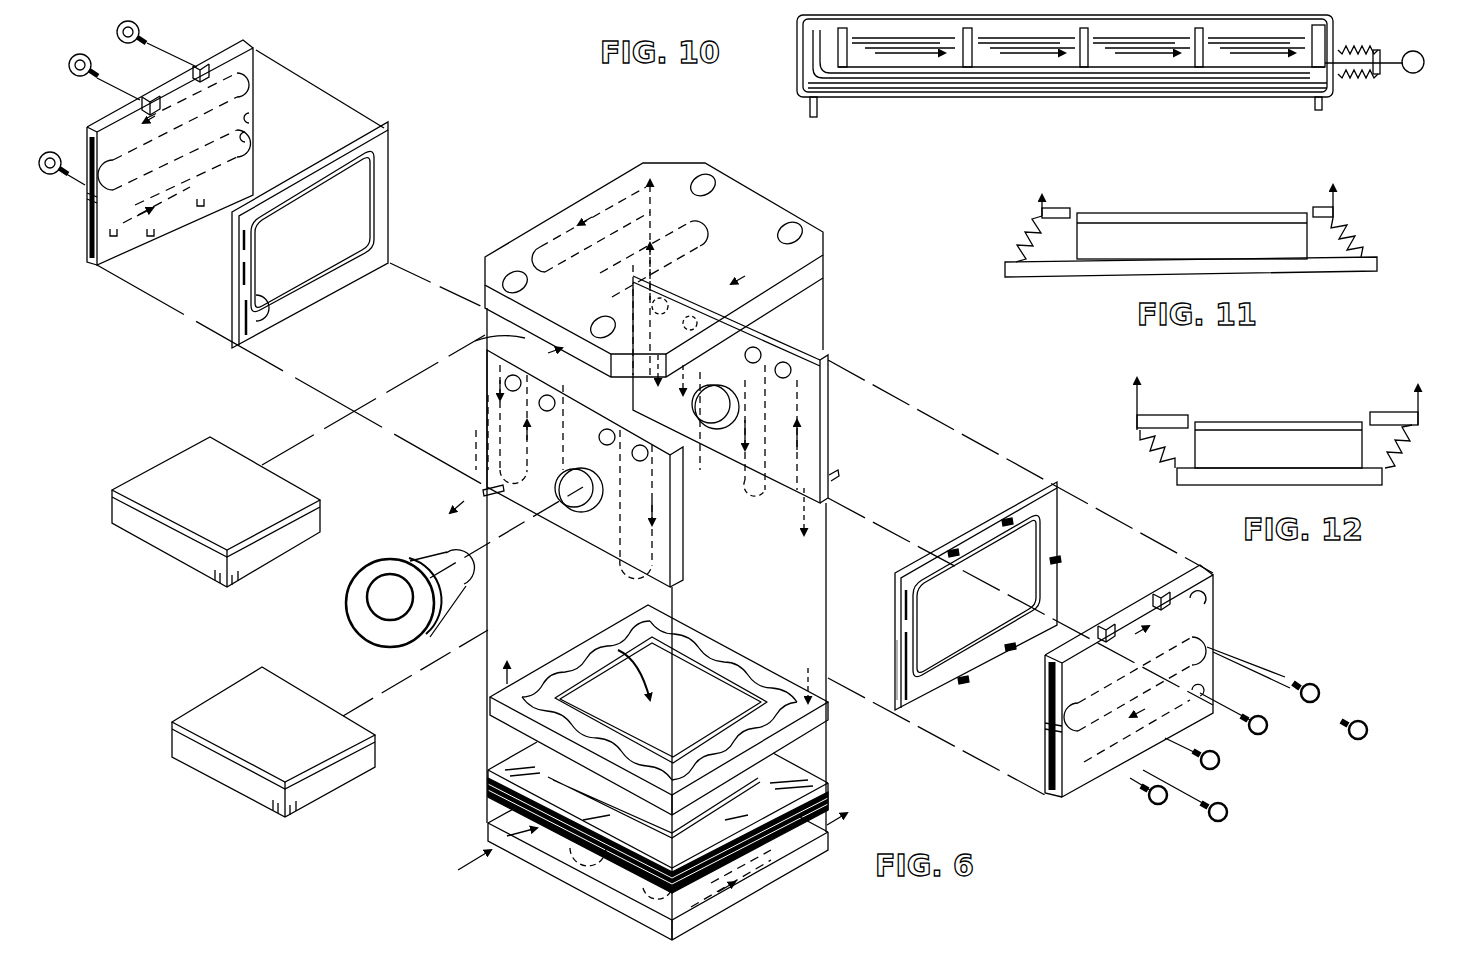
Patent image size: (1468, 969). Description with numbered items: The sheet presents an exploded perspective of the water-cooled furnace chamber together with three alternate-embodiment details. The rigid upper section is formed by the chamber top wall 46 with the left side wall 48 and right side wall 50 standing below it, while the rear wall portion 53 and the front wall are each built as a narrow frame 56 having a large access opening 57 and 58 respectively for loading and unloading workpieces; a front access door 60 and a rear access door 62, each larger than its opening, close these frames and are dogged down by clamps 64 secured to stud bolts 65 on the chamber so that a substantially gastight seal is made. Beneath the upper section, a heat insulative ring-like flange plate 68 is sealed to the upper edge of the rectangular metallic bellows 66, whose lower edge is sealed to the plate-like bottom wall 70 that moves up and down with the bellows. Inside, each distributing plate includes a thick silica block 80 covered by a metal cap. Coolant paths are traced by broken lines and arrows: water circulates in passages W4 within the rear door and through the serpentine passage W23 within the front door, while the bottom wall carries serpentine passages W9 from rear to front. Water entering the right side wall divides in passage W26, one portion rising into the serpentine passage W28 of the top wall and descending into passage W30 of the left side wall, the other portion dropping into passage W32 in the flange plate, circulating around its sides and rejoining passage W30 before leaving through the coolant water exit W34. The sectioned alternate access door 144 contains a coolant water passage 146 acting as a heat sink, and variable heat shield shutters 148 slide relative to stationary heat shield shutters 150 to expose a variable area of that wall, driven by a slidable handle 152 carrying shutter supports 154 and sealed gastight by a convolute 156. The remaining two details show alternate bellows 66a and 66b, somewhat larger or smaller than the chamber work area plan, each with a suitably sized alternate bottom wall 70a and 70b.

In FIG. 6, the chamber top wall 46 is at (824, 246).
In FIG. 6, the chamber left side wall 48 is at (573, 507).
In FIG. 6, the chamber right side wall 50 is at (822, 383).
In FIG. 6, the rear wall portion 53 is at (252, 139).
In FIG. 6, the narrow frame 56 is at (390, 158).
In FIG. 6, the access opening 57 is at (898, 624).
In FIG. 6, the access opening 58 is at (257, 338).
In FIG. 6, the front access door 60 is at (1207, 627).
In FIG. 6, the rear access door 62 is at (262, 49).
In FIG. 6, the clamps 64 is at (50, 152).
In FIG. 6, the stud bolts 65 is at (1058, 560).
In FIG. 6, the metallic bellows 66 is at (828, 793).
In FIG. 11, the alternate bellows 66a is at (1348, 225).
In FIG. 12, the alternate bellows 66b is at (1140, 432).
In FIG. 6, the flange plate 68 is at (820, 717).
In FIG. 6, the bottom wall 70 is at (817, 850).
In FIG. 11, the alternate bottom wall 70a is at (1330, 277).
In FIG. 12, the alternate bottom wall 70b is at (1360, 485).
In FIG. 6, the block of ceramic material 80 is at (226, 708).
In FIG. 11, the block of ceramic material 80 is at (1200, 235).
In FIG. 12, the block of ceramic material 80 is at (1262, 445).
In FIG. 6, the coolant passages W4 is at (243, 100).
In FIG. 6, the serpentine coolant passages W9 is at (757, 870).
In FIG. 6, the serpentine coolant passage W23 is at (1080, 752).
In FIG. 6, the coolant passage W26 is at (803, 403).
In FIG. 6, the coolant passage W28 is at (700, 224).
In FIG. 6, the coolant passage W30 is at (488, 489).
In FIG. 6, the coolant passage W32 is at (693, 637).
In FIG. 6, the coolant water exit W34 is at (483, 492).
In FIG. 10, the alternate access door 144 is at (1007, 97).
In FIG. 10, the coolant water passage 146 is at (1157, 83).
In FIG. 10, the variable heat shield shutters 148 is at (987, 62).
In FIG. 10, the stationary heat shield shutters 150 is at (1057, 66).
In FIG. 10, the slidable handle 152 is at (1393, 60).
In FIG. 10, the shutter supports 154 is at (1090, 58).
In FIG. 10, the convolute 156 is at (1355, 82).